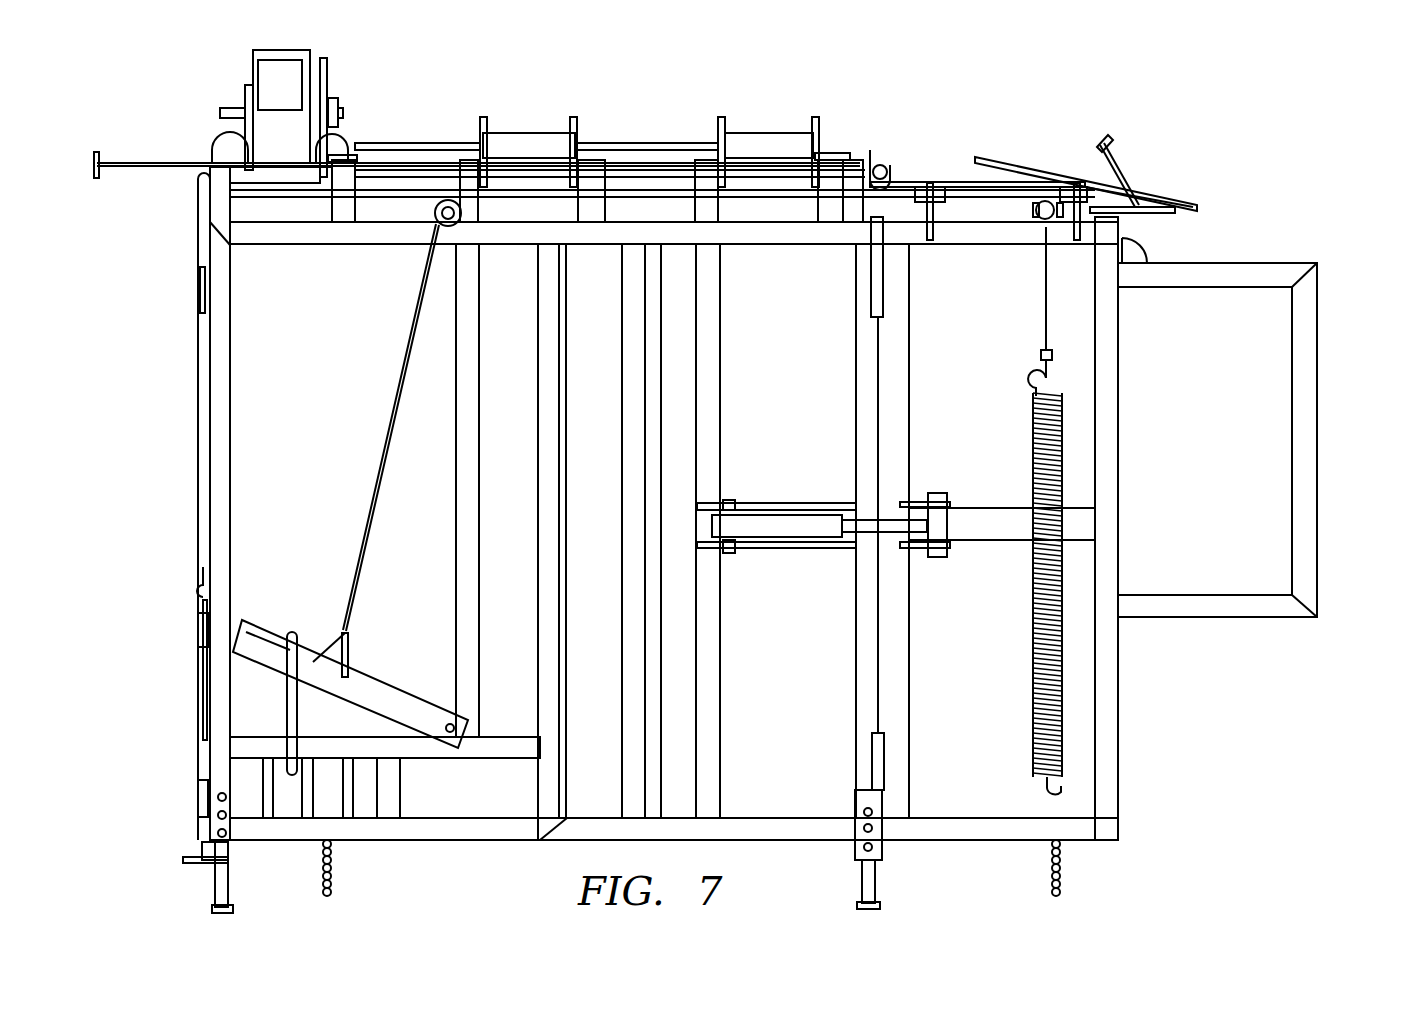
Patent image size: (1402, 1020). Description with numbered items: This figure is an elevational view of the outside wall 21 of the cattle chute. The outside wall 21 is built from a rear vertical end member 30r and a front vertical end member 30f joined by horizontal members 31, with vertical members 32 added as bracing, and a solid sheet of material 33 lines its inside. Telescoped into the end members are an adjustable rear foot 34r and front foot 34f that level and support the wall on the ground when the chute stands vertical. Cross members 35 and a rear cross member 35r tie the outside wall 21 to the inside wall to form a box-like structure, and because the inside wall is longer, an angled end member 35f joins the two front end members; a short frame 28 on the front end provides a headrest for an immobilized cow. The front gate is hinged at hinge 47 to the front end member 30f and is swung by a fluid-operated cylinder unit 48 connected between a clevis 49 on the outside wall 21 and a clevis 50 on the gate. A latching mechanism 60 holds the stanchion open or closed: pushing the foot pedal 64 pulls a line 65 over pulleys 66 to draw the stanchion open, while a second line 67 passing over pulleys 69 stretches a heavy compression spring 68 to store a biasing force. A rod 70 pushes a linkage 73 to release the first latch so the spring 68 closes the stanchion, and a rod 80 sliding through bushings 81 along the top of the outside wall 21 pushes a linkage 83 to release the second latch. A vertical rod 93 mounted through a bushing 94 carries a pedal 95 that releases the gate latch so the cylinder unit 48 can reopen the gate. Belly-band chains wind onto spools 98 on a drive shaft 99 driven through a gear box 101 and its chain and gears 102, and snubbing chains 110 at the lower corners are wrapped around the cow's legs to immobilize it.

The outside wall 21 is at (664, 439).
The short frame 28 is at (1328, 530).
The rear vertical end member 30r is at (232, 410).
The front vertical end member 30f is at (862, 345).
The horizontal members 31 is at (823, 235).
The vertical members 32 is at (538, 643).
The solid sheet of material 33 is at (423, 544).
The rear foot 34r is at (215, 885).
The front foot 34f is at (882, 880).
The cross members 35 is at (356, 198).
The rear cross member 35r is at (233, 205).
The angled end member 35f is at (853, 165).
The hinge 47 is at (884, 297).
The fluid-operated cylinder unit 48 is at (795, 515).
The clevis 49 is at (733, 553).
The clevis 50 is at (965, 455).
The latching mechanism 60 is at (1045, 175).
The foot pedal 64 is at (385, 685).
The line 65 is at (390, 362).
The pulleys 66 is at (448, 227).
The line 67 is at (1043, 320).
The compression spring 68 is at (1033, 430).
The pulleys 69 is at (1040, 223).
The rod 70 is at (1040, 157).
The linkage 73 is at (1125, 172).
The rod 80 is at (150, 163).
The bushings 81 is at (345, 157).
The linkage 83 is at (1178, 205).
The vertical rod 93 is at (203, 685).
The bushing 94 is at (198, 625).
The pedal 95 is at (183, 860).
The spool 98 is at (535, 134).
The drive shaft 99 is at (438, 146).
The gear box 101 is at (256, 68).
The chain and gears 102 is at (327, 70).
The snubbing chains 110 is at (333, 878).